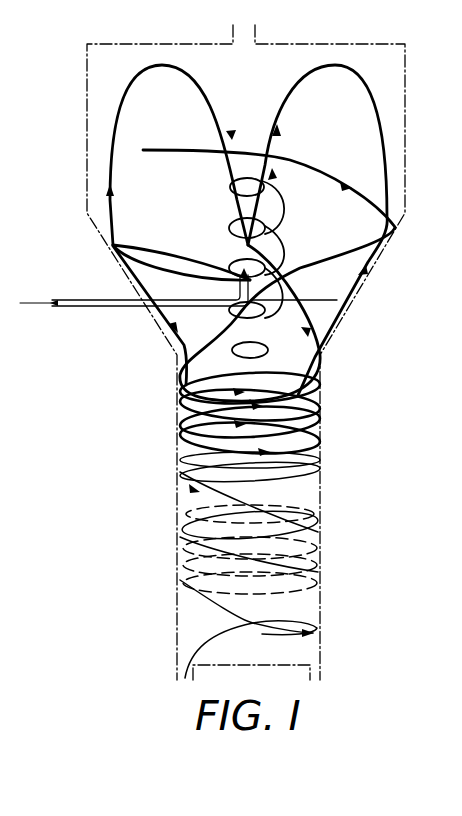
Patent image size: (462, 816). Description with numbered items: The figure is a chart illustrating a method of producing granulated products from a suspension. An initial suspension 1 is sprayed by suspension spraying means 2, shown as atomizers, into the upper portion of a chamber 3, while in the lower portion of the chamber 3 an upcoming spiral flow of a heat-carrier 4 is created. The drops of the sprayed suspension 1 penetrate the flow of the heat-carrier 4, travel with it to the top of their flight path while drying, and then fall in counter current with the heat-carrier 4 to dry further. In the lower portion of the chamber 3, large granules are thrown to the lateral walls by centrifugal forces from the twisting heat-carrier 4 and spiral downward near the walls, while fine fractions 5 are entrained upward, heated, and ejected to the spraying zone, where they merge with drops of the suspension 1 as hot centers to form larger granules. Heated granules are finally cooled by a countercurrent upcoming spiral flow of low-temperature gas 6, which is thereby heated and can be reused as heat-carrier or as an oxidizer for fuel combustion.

The suspension 1 is at (105, 218).
The suspension spraying means 2 is at (233, 278).
The chamber 3 is at (409, 166).
The heat-carrier 4 is at (329, 440).
The fine fractions 5 is at (277, 213).
The low-temperature gas 6 is at (321, 528).